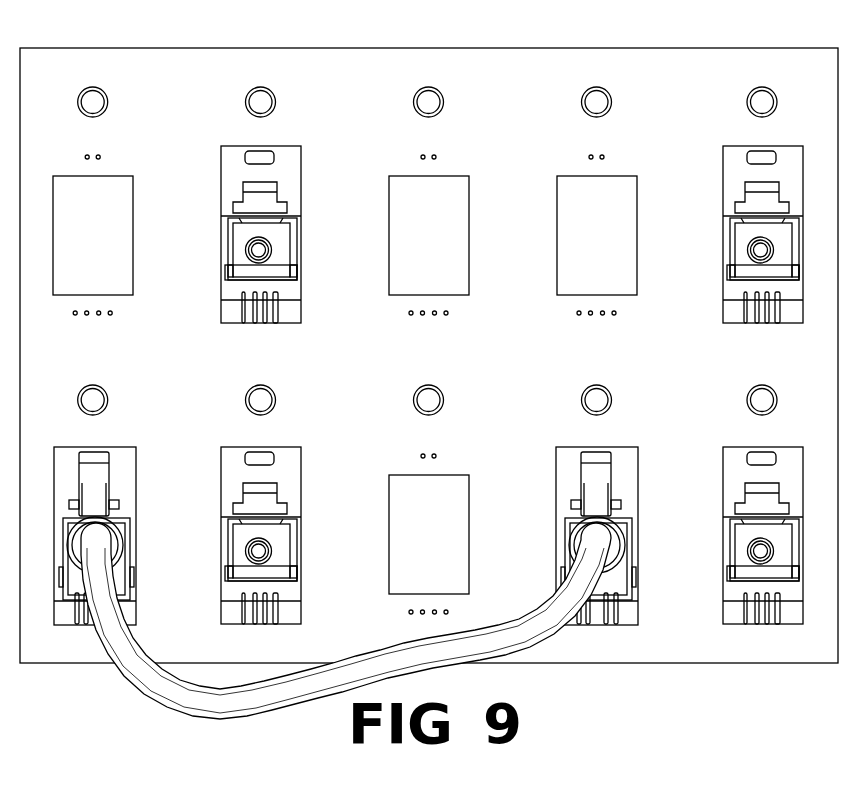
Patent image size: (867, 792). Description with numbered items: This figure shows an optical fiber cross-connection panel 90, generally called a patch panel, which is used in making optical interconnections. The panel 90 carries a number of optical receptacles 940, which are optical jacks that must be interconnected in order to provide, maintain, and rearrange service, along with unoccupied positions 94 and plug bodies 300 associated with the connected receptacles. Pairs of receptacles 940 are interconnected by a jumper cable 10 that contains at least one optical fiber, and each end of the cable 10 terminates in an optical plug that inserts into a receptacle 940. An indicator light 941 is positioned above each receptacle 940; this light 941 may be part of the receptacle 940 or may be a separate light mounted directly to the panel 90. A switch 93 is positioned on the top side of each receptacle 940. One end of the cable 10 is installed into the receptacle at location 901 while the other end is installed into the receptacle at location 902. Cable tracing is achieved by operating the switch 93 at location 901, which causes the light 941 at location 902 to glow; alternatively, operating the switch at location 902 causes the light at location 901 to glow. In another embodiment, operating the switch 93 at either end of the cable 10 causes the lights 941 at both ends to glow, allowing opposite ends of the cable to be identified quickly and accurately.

The optical fiber cross-connection panel 90 is at (100, 58).
The switch 93 is at (602, 93).
The unpopulated connector footprint 94 is at (400, 183).
The optical receptacle 940 is at (134, 588).
The indicator light 941 is at (95, 458).
The plug housing ring 300 is at (133, 520).
The jumper cable 10 is at (393, 650).
The location 901 is at (141, 430).
The location 902 is at (643, 430).